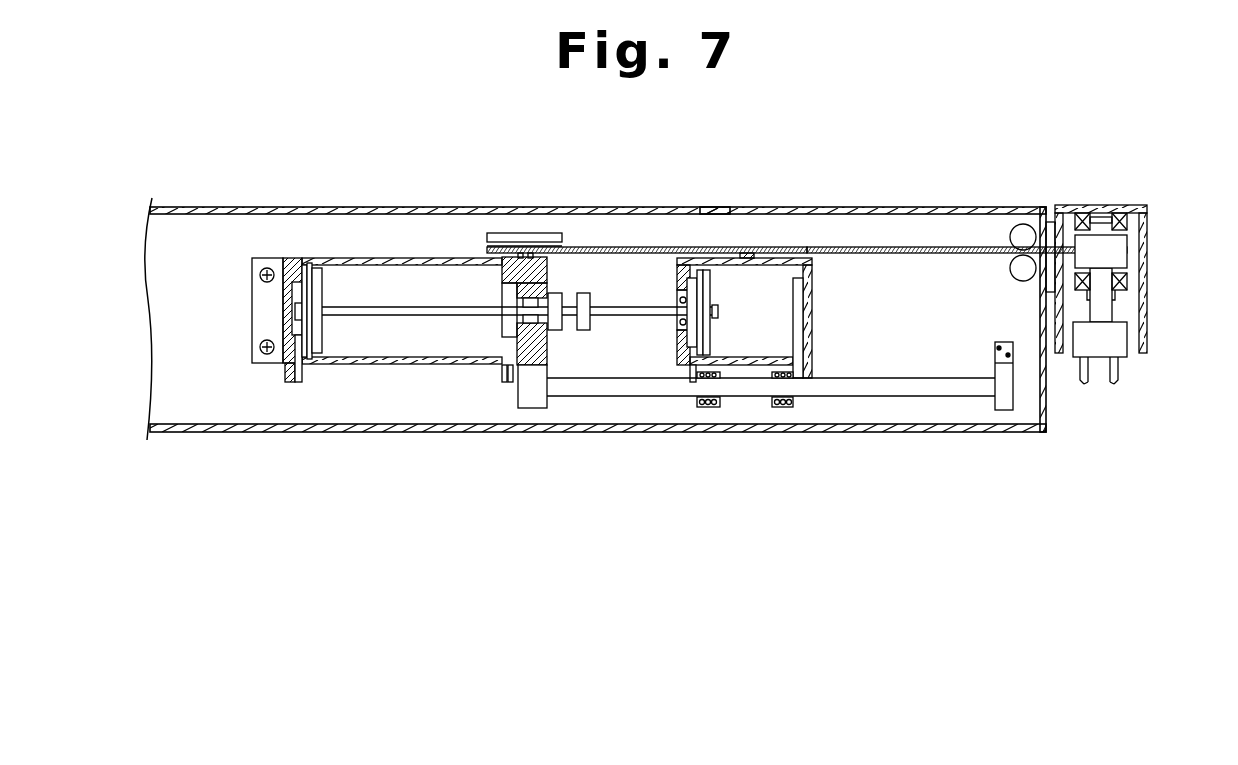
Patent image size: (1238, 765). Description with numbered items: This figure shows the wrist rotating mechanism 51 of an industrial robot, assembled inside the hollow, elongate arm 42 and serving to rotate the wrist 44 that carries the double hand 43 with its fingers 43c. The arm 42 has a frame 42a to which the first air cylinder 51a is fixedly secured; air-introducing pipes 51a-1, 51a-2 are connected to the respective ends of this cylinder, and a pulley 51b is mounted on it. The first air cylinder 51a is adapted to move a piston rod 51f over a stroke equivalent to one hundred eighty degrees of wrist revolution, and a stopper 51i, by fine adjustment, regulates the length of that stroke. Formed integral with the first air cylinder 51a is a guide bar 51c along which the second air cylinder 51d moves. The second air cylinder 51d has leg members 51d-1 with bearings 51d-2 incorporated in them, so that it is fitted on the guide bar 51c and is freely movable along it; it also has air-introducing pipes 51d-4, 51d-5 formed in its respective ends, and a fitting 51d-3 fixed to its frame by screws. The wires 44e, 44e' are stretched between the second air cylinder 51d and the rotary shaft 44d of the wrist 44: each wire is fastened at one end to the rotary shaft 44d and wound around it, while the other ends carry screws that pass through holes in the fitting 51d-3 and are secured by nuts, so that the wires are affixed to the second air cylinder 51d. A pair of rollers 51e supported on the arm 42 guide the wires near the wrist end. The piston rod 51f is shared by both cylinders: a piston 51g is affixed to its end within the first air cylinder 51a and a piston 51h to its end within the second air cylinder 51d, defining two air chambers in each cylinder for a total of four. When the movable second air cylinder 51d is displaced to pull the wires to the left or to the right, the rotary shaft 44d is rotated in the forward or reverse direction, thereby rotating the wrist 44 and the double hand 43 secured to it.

The arm 42 is at (352, 208).
The frame 42a is at (710, 209).
The double hand 43 is at (1118, 331).
The fingers 43c is at (1122, 372).
The wrist 44 is at (1132, 241).
The rotary shaft 44d is at (1098, 243).
The wire 44e is at (647, 215).
The wire 44e' is at (967, 201).
The wrist rotating mechanism 51 is at (597, 415).
The first air cylinder 51a is at (413, 368).
The air-introducing pipe 51a-1 is at (293, 384).
The air-introducing pipe 51a-2 is at (507, 384).
The pulley 51b is at (539, 233).
The guide bar 51c is at (637, 396).
The second air cylinder 51d is at (817, 258).
The leg members 51d-1 is at (708, 408).
The bearings 51d-2 is at (775, 409).
The fitting 51d-3 is at (748, 246).
The air-introducing pipe 51d-4 is at (693, 372).
The air-introducing pipe 51d-5 is at (801, 378).
The rollers 51e is at (1023, 224).
The piston rod 51f is at (434, 305).
The piston 51g is at (330, 366).
The piston 51h is at (687, 370).
The stopper 51i is at (584, 300).